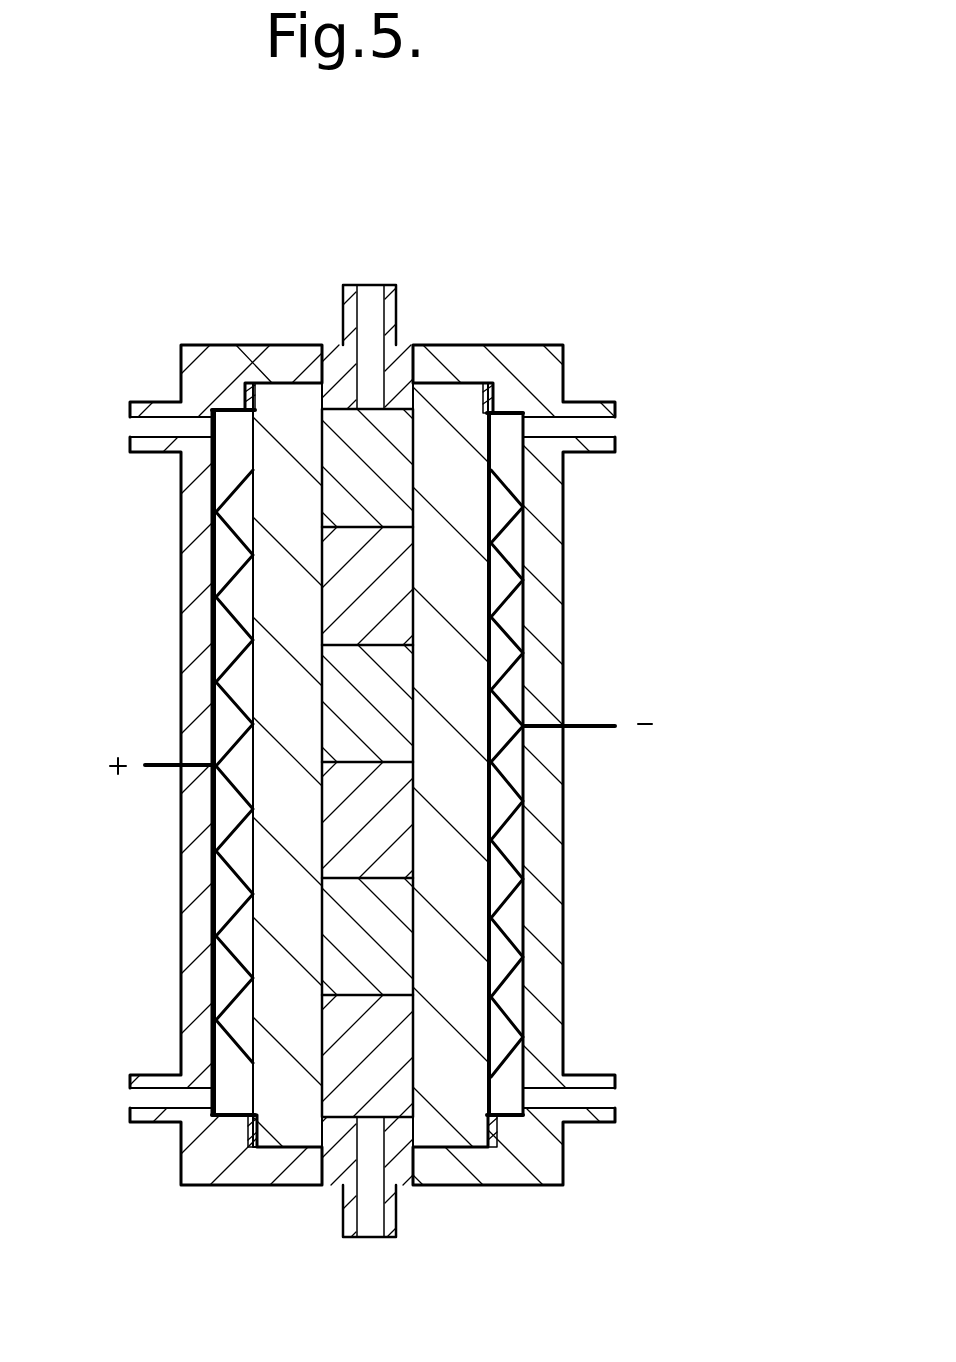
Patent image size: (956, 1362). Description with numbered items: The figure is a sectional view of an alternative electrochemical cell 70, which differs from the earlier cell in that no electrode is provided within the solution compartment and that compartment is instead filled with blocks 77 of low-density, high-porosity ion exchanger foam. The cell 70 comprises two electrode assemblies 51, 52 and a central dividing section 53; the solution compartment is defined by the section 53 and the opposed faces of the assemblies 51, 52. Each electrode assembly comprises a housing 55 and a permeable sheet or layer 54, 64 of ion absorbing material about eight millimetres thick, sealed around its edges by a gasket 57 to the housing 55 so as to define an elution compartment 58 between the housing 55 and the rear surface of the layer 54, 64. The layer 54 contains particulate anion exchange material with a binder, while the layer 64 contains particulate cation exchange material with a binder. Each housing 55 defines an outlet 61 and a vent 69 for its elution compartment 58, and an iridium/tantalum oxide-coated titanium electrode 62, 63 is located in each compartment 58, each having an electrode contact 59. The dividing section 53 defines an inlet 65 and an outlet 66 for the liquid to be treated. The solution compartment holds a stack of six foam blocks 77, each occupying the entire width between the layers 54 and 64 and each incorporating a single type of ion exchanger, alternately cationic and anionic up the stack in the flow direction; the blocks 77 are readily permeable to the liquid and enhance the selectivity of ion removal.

The electrochemical cell 70 is at (503, 300).
The electrode assembly 51 is at (280, 343).
The electrode assembly 52 is at (533, 342).
The dividing section 53 is at (418, 343).
The permeable layer of ion absorbing material 54 is at (280, 1117).
The housing 55 is at (208, 995).
The gasket 57 is at (250, 390).
The elution compartment 58 is at (213, 627).
The electrode contact 59 is at (152, 776).
The outlet 61 is at (148, 1098).
The electrode 62 is at (214, 690).
The electrode 63 is at (508, 673).
The permeable layer of ion absorbing material 64 is at (455, 1125).
The inlet 65 is at (377, 1228).
The outlet 66 is at (370, 305).
The vent 69 is at (143, 427).
The blocks of ion exchanger foam 77 is at (395, 577).